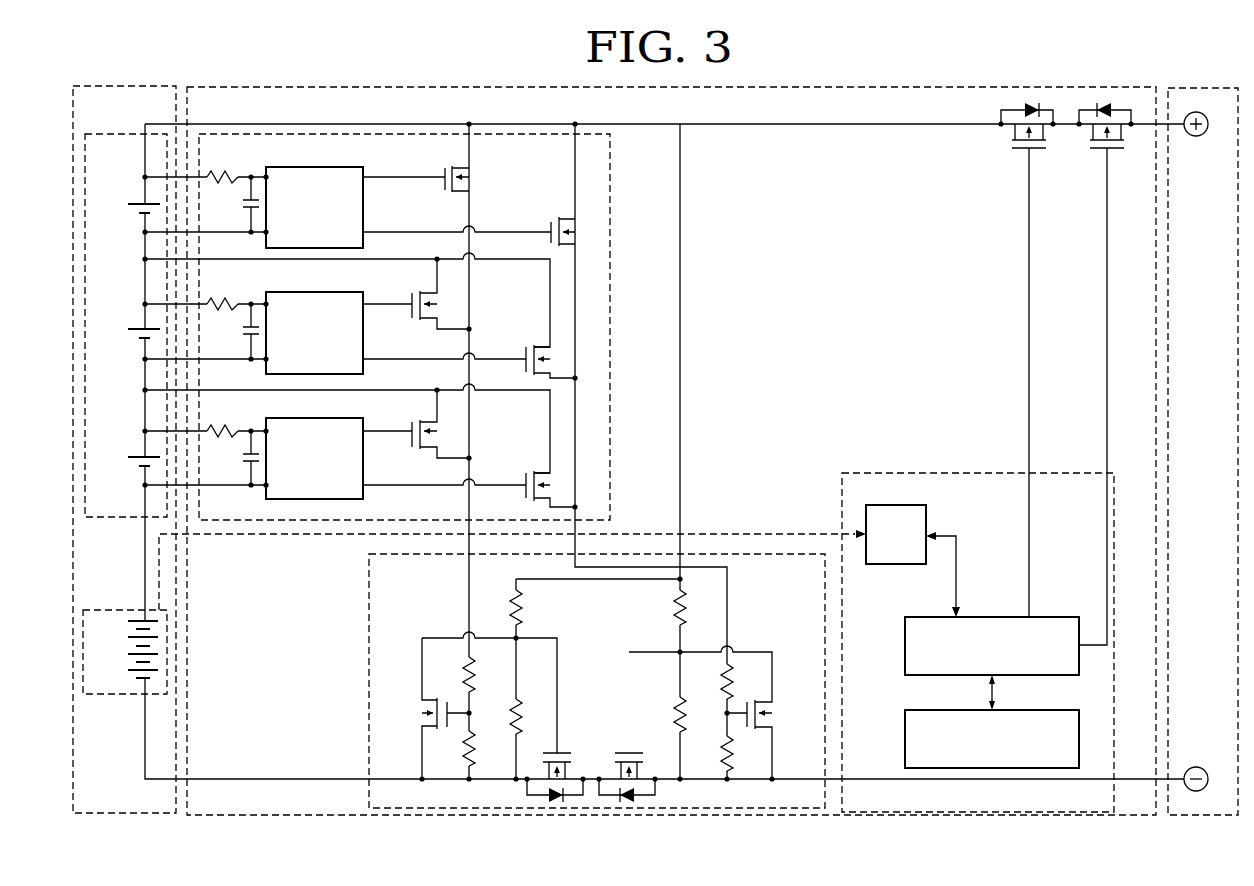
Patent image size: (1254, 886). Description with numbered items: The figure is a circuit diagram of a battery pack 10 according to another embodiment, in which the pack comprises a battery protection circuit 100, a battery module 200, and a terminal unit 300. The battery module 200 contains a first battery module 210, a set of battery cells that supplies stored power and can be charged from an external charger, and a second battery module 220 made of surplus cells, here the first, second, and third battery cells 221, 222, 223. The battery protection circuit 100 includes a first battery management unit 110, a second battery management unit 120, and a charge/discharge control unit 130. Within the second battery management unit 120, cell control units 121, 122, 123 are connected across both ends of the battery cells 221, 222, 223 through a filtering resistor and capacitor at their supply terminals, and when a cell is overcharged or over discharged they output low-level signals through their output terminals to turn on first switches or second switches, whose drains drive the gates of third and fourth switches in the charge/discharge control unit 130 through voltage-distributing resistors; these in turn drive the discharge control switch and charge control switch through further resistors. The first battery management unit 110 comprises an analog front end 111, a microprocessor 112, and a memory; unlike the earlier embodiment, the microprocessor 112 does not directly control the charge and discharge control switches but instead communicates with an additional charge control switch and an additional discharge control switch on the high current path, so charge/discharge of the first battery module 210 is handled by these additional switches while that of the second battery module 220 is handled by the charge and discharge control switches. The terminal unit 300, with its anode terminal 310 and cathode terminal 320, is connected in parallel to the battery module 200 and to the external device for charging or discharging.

The battery pack 10 is at (1131, 57).
The battery protection circuit 100 is at (825, 87).
The first battery management unit 110 is at (1045, 473).
The analog front end 111 is at (898, 505).
The microprocessor 112 is at (1042, 617).
The second battery management unit 120 is at (318, 134).
The cell control unit 121 is at (320, 167).
The cell control unit 122 is at (320, 292).
The cell control unit 123 is at (320, 418).
The charge/discharge control unit 130 is at (775, 554).
The battery module 200 is at (142, 86).
The first battery module 210 is at (107, 610).
The second battery module 220 is at (110, 134).
The first battery cell 221 is at (124, 220).
The second battery cell 222 is at (124, 346).
The third battery cell 223 is at (124, 472).
The terminal unit 300 is at (1198, 88).
The anode terminal 310 is at (1197, 136).
The cathode terminal 320 is at (1196, 767).